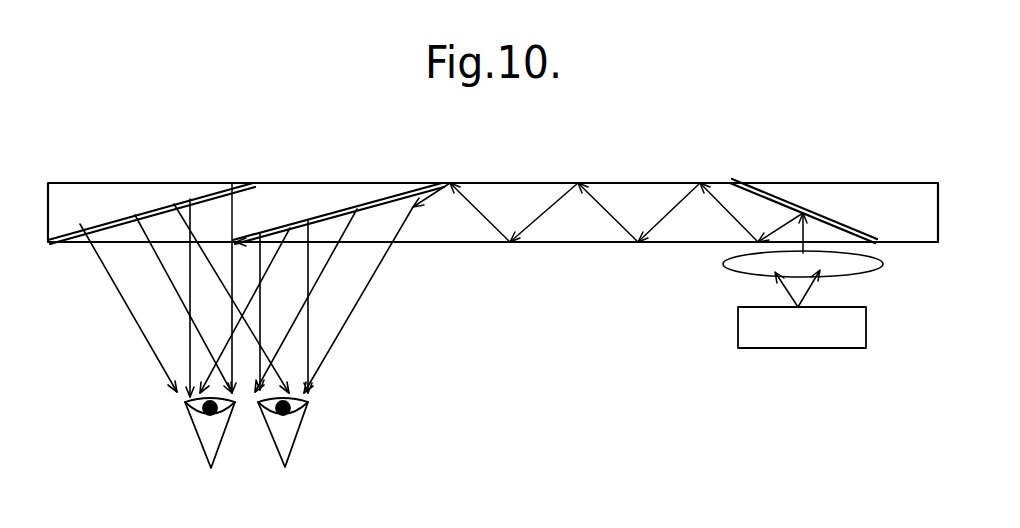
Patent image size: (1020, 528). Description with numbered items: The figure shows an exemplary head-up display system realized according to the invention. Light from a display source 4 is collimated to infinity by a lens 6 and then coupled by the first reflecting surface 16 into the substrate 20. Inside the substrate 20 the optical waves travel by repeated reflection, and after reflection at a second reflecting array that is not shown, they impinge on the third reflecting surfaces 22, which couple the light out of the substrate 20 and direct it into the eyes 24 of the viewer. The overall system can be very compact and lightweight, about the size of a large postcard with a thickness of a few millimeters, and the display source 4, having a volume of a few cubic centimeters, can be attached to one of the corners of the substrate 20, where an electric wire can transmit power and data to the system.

The display source 4 is at (866, 323).
The lens 6 is at (883, 262).
The first reflecting surface 16 is at (803, 212).
The substrate 20 is at (648, 193).
The third reflecting surfaces 22 is at (130, 215).
The eyes 24 is at (285, 466).